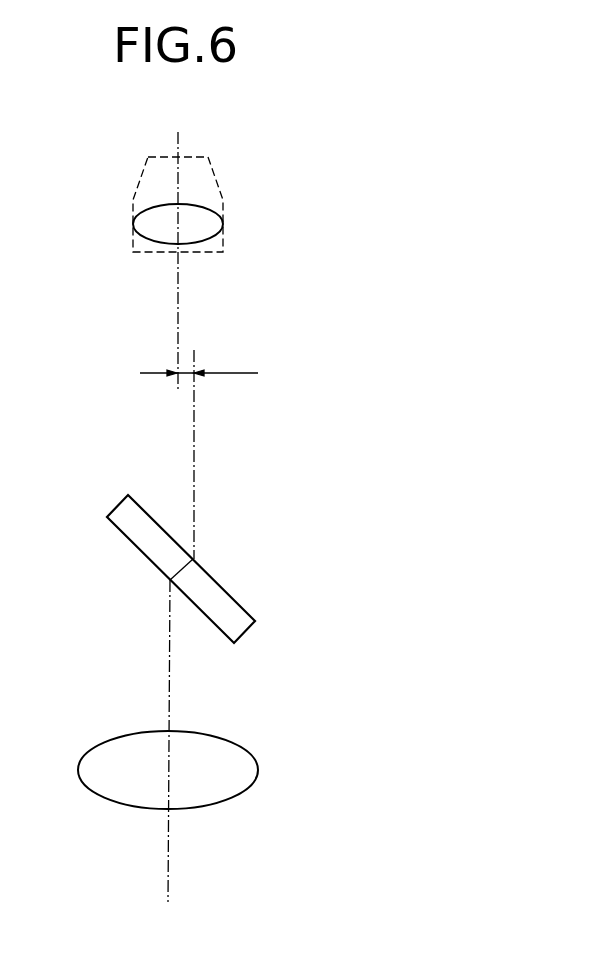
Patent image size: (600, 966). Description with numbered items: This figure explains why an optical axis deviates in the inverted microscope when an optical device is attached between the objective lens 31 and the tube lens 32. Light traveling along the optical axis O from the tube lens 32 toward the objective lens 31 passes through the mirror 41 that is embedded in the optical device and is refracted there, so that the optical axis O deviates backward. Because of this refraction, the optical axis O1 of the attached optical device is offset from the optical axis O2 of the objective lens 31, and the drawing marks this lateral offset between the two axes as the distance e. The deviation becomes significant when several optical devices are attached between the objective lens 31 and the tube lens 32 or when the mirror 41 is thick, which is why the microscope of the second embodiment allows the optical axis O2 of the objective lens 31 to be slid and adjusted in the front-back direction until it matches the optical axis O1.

The objective lens 31 is at (215, 226).
The tube lens 32 is at (248, 768).
The mirror 41 is at (233, 610).
The optical axis O is at (168, 858).
The optical axis of the optical device O1 is at (194, 452).
The optical axis of the objective lens O2 is at (178, 290).
The axis offset distance e is at (199, 360).